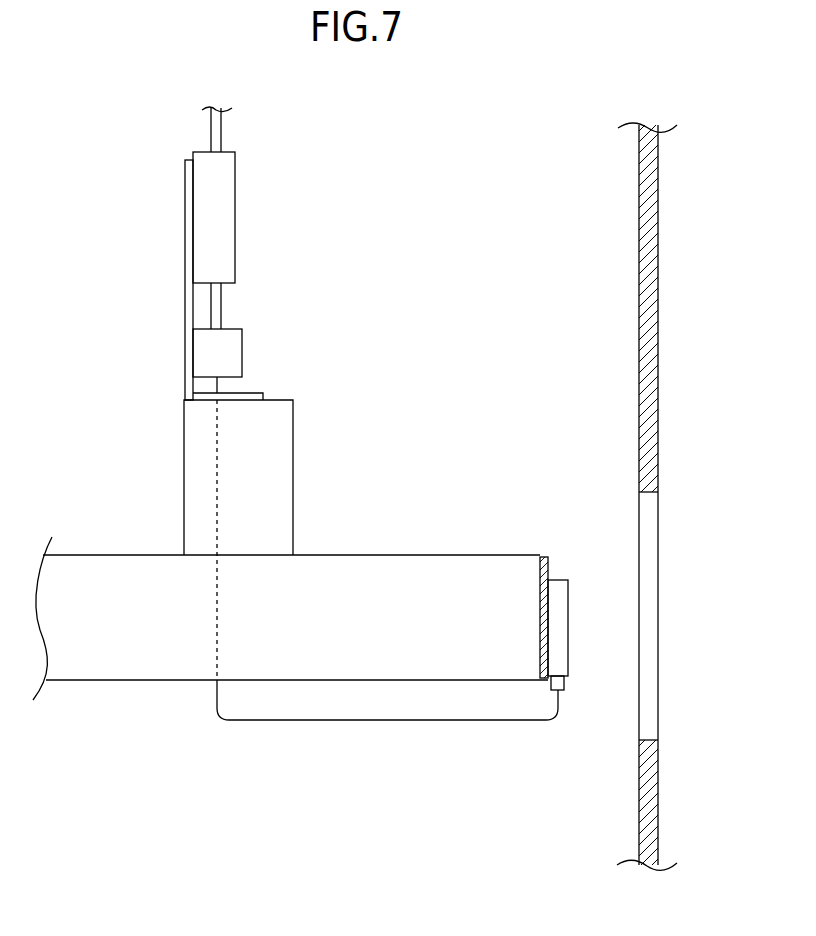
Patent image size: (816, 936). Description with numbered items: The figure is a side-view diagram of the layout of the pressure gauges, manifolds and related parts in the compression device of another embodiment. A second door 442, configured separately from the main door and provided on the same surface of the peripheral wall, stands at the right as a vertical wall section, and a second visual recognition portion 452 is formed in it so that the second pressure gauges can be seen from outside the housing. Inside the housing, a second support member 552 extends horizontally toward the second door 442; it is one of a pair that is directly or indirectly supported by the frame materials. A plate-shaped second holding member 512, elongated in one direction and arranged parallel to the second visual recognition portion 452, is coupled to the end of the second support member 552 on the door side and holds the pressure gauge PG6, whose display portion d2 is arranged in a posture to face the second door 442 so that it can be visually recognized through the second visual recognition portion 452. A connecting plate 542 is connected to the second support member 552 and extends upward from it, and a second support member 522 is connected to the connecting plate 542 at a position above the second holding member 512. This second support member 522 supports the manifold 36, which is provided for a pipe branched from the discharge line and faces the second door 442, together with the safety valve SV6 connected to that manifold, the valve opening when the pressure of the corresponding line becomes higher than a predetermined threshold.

The safety valve SV6 is at (236, 163).
The second support member 522 is at (185, 305).
The manifold 36 is at (242, 338).
The connecting plate 542 is at (197, 473).
The second support member 552 is at (127, 553).
The second holding member 512 is at (545, 557).
The pressure gauge PG6 is at (555, 580).
The display portion d2 is at (572, 628).
The second door 442 is at (655, 307).
The second visual recognition portion 452 is at (659, 620).